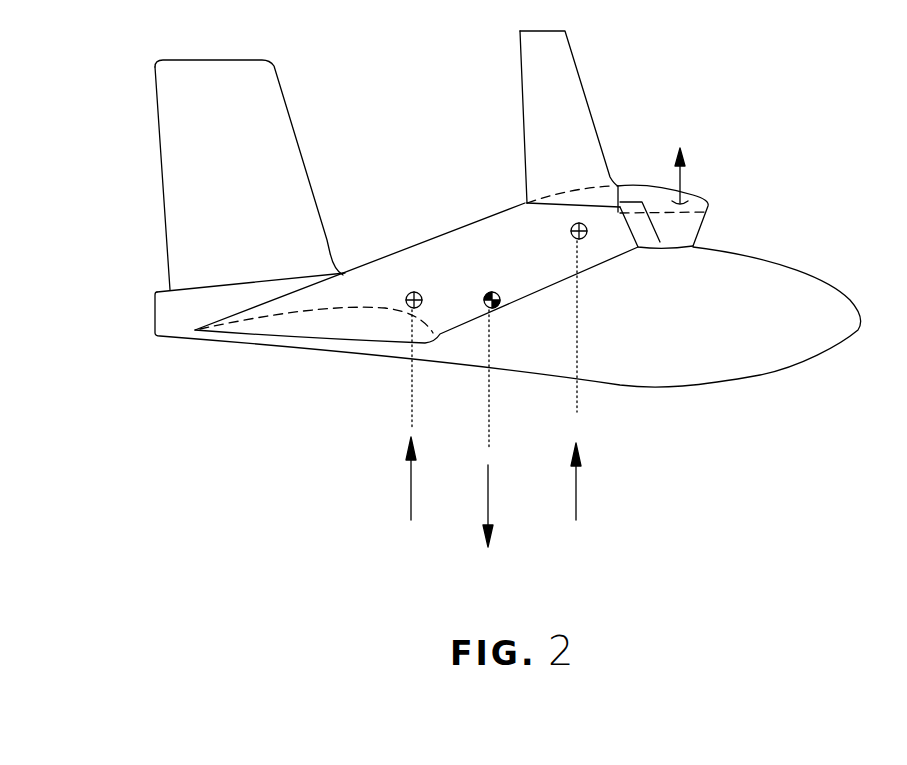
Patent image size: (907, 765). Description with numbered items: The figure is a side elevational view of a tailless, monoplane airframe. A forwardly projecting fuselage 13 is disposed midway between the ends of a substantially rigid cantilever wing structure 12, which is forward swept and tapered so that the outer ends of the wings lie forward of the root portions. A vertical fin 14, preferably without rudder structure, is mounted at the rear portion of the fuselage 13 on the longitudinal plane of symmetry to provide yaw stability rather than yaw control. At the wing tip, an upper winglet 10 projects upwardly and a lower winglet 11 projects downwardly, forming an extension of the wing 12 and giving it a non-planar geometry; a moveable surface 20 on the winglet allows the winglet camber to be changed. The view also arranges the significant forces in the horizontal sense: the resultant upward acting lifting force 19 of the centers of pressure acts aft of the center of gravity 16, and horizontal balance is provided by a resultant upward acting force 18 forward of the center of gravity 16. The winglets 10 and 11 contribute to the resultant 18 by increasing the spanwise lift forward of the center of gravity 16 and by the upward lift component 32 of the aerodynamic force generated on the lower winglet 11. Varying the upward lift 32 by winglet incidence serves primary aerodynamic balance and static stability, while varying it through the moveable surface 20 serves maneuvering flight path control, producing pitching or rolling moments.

The upper winglet 10 is at (575, 55).
The lower winglet 11 is at (700, 232).
The wing structure 12 is at (468, 225).
The fuselage 13 is at (788, 368).
The vertical fin 14 is at (157, 137).
The center of gravity 16 is at (485, 431).
The resultant upward acting force 18 is at (575, 386).
The resultant upward acting lifting force 19 is at (408, 419).
The moveable surface 20 is at (656, 243).
The upward lift component 32 is at (691, 171).